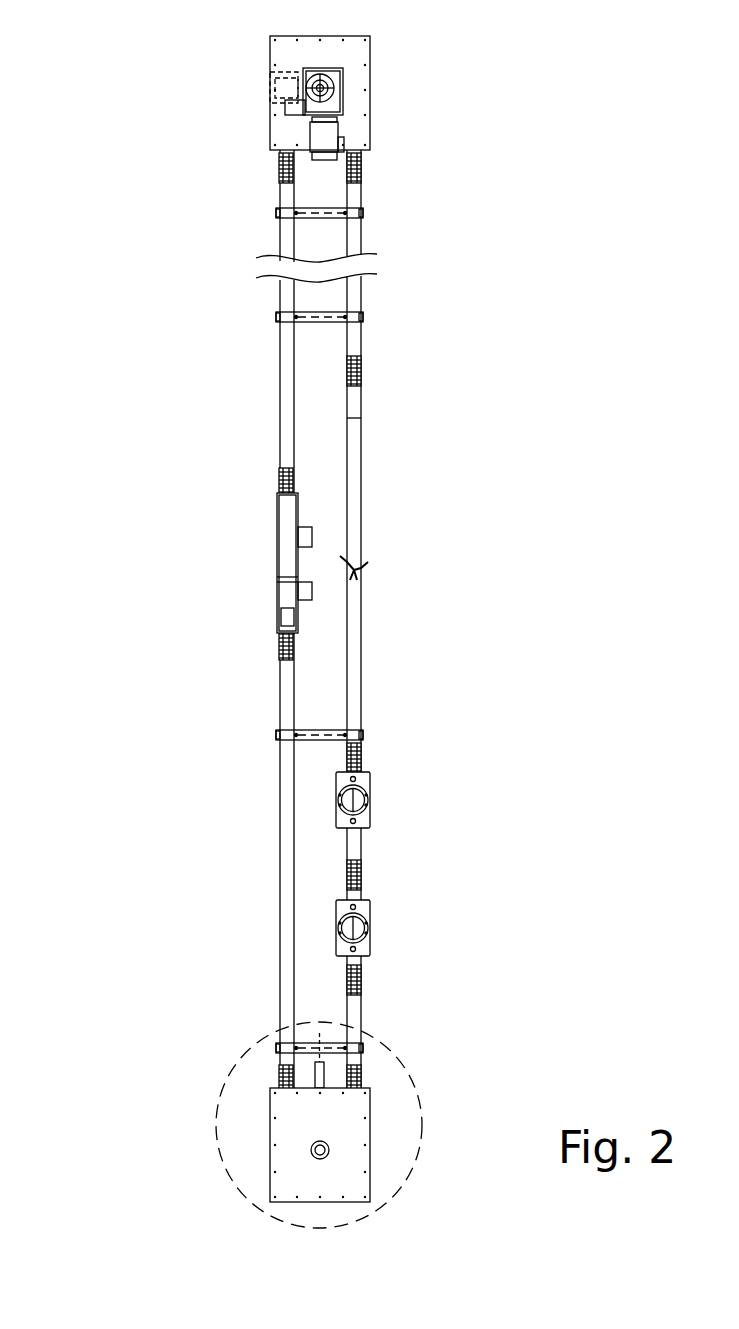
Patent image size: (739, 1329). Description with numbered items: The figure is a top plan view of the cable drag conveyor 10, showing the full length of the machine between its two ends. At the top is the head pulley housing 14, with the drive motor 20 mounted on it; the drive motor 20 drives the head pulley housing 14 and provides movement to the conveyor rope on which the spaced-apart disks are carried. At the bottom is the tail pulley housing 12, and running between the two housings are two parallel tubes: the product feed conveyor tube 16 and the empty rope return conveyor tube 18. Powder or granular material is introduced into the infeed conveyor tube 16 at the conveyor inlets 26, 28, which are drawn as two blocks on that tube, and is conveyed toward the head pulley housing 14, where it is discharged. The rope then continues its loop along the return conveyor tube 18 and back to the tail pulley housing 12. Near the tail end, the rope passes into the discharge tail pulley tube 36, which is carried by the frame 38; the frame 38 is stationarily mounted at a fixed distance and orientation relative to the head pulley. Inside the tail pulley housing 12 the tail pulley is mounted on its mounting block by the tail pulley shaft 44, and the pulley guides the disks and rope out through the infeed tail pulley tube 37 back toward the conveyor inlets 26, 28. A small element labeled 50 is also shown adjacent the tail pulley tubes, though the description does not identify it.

The cable drag conveyor 10 is at (106, 520).
The tail pulley housing 12 is at (298, 1124).
The head pulley housing 14 is at (287, 60).
The product feed conveyor tube 16 is at (355, 525).
The empty rope return conveyor tube 18 is at (288, 887).
The drive motor 20 is at (315, 138).
The conveyor inlet 26 is at (370, 928).
The conveyor inlet 28 is at (370, 783).
The discharge tail pulley tube 36 is at (278, 1077).
The infeed tail pulley tube 37 is at (363, 1075).
The frame 38 is at (370, 1155).
The tail pulley shaft 44 is at (318, 1151).
The sensor 50 is at (315, 1075).